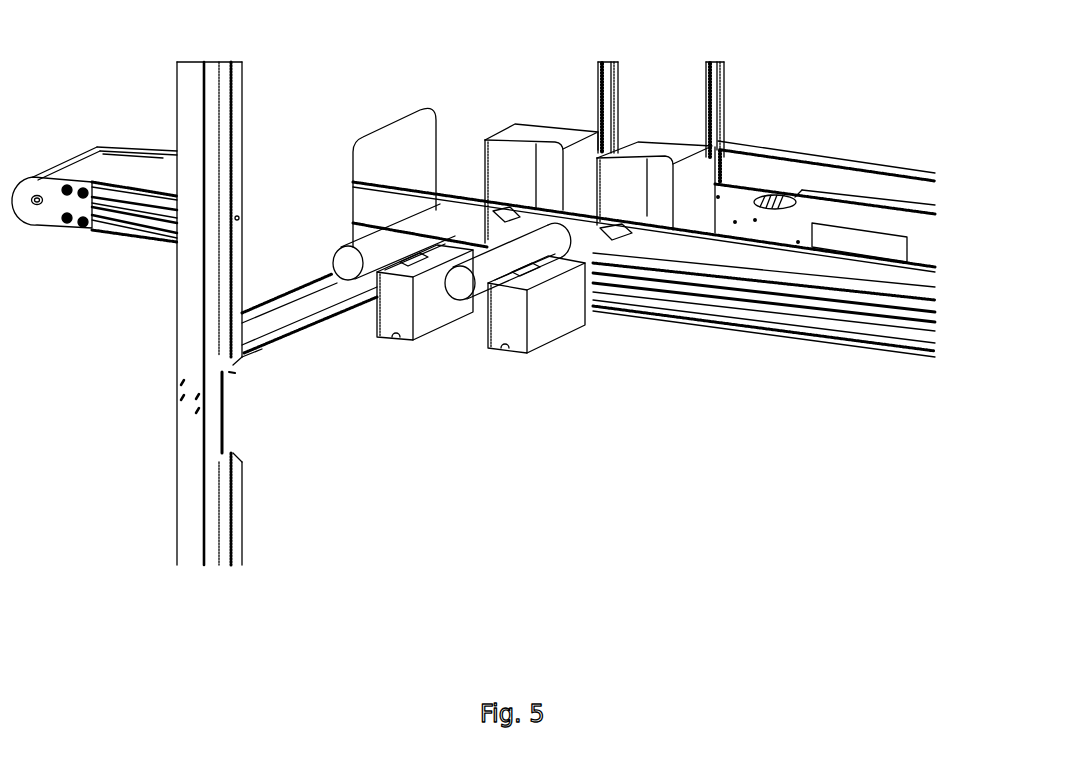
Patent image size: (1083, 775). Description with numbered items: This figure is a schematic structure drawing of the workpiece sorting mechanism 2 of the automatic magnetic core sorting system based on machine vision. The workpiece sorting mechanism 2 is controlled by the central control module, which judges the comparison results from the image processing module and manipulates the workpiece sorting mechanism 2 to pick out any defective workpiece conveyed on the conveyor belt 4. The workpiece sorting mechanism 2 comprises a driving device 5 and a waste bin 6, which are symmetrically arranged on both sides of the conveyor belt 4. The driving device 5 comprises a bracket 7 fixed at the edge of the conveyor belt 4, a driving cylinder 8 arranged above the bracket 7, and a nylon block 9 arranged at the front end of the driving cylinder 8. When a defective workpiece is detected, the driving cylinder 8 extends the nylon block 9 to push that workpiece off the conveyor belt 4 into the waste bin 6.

The workpiece sorting mechanism 2 is at (381, 222).
The conveyor belt 4 is at (95, 165).
The driving device 5 is at (432, 290).
The waste bin 6 is at (576, 162).
The bracket 7 is at (548, 313).
The driving cylinder 8 is at (490, 277).
The nylon block 9 is at (583, 237).